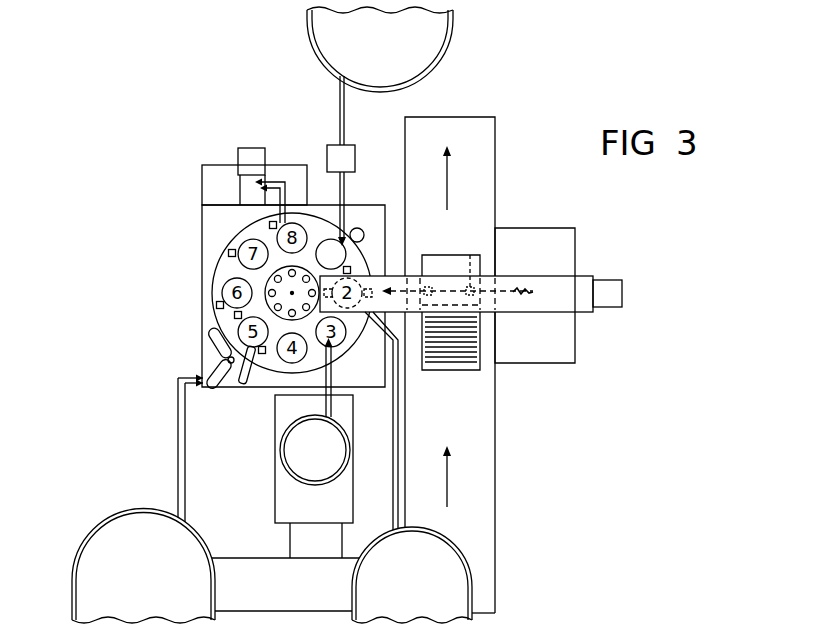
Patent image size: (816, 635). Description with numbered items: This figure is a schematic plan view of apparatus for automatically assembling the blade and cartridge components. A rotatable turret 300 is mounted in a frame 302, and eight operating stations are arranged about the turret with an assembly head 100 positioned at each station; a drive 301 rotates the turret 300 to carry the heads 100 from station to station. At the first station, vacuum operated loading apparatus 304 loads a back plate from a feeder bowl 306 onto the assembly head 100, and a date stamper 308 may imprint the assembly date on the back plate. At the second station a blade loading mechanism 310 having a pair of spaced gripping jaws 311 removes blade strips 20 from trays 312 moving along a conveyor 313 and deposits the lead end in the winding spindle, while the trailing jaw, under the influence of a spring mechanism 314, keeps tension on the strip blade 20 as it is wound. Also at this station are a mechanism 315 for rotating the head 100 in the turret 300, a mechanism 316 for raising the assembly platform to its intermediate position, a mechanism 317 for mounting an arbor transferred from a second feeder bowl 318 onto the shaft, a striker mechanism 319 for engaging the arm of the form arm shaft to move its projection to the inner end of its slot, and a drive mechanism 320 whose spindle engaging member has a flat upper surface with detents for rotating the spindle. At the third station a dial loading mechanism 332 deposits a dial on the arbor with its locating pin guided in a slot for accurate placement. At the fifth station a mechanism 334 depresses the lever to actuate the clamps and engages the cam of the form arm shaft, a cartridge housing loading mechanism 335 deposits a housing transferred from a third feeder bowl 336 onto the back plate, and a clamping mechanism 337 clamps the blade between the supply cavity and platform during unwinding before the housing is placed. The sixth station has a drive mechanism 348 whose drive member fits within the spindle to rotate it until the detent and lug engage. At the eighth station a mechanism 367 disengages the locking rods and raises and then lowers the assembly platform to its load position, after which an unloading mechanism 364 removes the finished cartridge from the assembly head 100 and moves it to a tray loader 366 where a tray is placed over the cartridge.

The blade strip 20 is at (458, 360).
The assembly head 100 is at (326, 240).
The rotatable turret 300 is at (218, 266).
The drive 301 is at (358, 228).
The frame 302 is at (208, 236).
The vacuum operated loading apparatus 304 is at (338, 112).
The feeder bowl 306 is at (398, 48).
The date stamper 308 is at (355, 156).
The blade loading mechanism 310 is at (578, 306).
The gripping jaws 311 is at (428, 285).
The tray 312 is at (457, 370).
The conveyor 313 is at (461, 422).
The spring mechanism 314 is at (513, 278).
The mechanism for rotating head 315 is at (362, 281).
The mechanism for raising assembly platform 316 is at (350, 381).
The arbor mounting mechanism 317 is at (393, 466).
The feeder bowl 318 is at (420, 584).
The striker mechanism 319 is at (352, 270).
The drive mechanism 320 is at (235, 314).
The dial loading mechanism 332 is at (332, 462).
The lever depressing mechanism 334 is at (261, 354).
The cartridge housing loading mechanism 335 is at (198, 358).
The feeder bowl 336 is at (153, 581).
The clamping mechanism 337 is at (253, 392).
The drive mechanism 348 is at (228, 252).
The unloading mechanism 364 is at (274, 178).
The tray loader 366 is at (250, 148).
The platform mechanism 367 is at (262, 219).